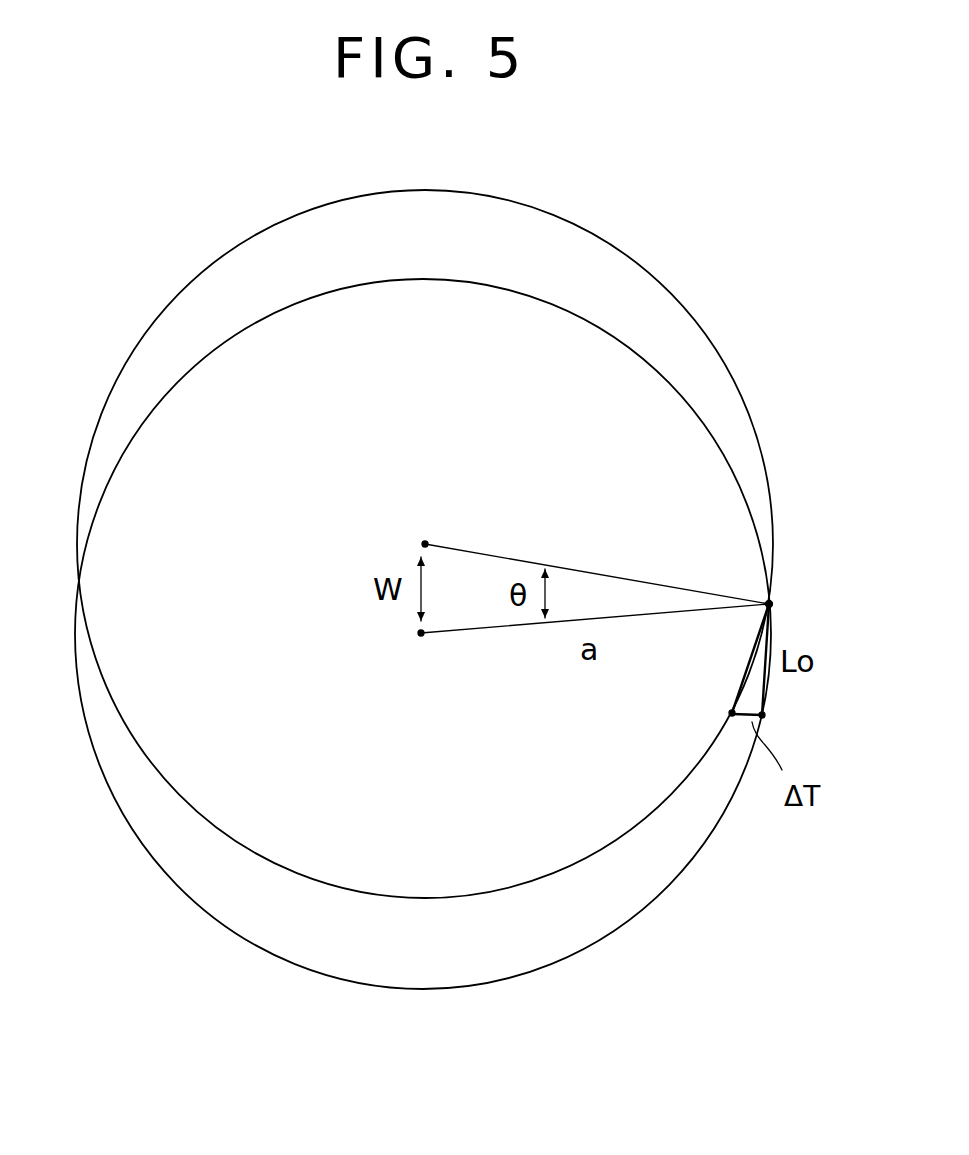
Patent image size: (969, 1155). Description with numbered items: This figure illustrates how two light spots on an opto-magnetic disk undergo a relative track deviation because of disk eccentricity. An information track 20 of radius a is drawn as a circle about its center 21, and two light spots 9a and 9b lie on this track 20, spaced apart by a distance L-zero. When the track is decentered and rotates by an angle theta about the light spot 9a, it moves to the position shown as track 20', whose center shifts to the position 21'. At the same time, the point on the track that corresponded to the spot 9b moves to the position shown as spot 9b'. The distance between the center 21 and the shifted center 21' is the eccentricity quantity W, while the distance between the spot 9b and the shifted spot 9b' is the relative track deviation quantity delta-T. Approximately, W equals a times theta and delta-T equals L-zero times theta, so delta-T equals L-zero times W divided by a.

The information track 20 is at (438, 634).
The decentered information track position 20' is at (458, 544).
The track center 21 is at (593, 658).
The shifted track center position 21' is at (595, 525).
The light spot 9a is at (772, 604).
The light spot 9b is at (806, 679).
The shifted light spot position 9b' is at (690, 678).